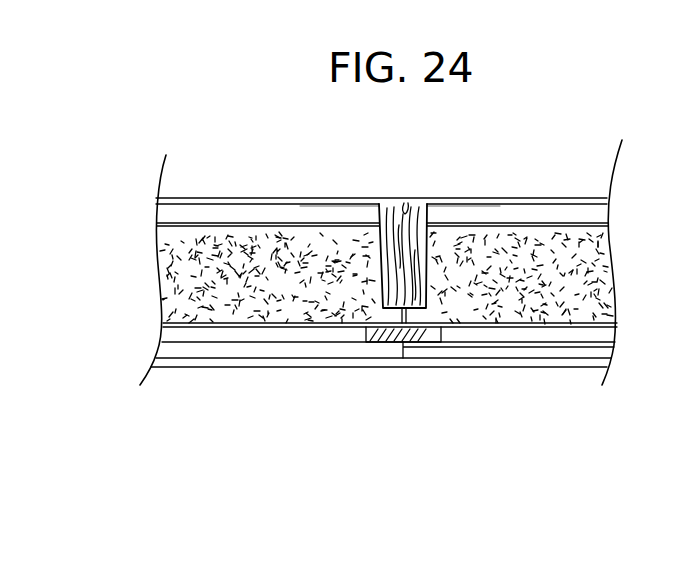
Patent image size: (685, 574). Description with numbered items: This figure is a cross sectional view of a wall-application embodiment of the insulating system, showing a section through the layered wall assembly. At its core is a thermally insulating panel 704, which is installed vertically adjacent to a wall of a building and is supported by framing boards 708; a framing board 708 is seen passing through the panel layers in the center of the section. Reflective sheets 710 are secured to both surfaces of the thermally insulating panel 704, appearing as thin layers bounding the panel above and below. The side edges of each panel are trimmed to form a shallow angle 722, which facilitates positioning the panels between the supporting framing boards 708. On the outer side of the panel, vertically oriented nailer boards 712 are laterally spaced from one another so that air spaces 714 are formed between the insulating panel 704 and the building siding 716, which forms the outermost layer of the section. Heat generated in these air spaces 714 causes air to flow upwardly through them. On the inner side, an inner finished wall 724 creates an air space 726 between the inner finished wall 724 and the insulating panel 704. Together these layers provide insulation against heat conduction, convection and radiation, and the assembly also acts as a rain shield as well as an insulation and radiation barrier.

The thermally insulating panel 704 is at (183, 312).
The framing board 708 is at (414, 213).
The reflective sheet 710 is at (222, 225).
The nailer board 712 is at (428, 333).
The air space 714 is at (285, 330).
The building siding 716 is at (432, 355).
The shallow angle 722 is at (327, 213).
The inner finished wall 724 is at (272, 200).
The air space 726 is at (310, 213).